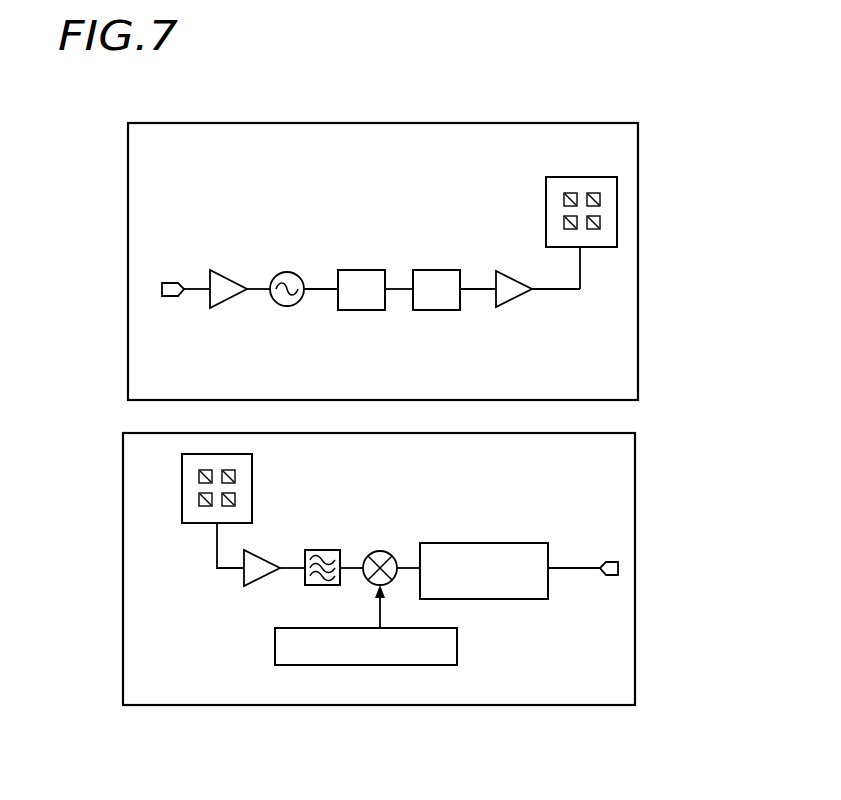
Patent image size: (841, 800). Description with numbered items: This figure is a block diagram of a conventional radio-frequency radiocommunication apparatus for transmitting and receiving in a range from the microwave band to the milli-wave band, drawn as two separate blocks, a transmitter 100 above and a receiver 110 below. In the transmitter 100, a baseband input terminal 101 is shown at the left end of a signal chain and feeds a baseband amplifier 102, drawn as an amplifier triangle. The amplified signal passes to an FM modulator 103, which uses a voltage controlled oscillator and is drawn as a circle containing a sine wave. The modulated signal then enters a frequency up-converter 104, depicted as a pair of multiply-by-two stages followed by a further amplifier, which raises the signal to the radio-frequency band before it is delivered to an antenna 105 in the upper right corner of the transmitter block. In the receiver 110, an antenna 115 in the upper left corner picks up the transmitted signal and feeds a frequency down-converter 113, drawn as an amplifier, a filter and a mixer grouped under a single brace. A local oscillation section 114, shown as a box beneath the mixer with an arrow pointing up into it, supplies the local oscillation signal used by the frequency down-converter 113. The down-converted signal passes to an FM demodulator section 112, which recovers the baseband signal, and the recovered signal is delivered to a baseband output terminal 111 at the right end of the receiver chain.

The transmitter 100 is at (601, 122).
The baseband input terminal 101 is at (172, 283).
The baseband amplifier 102 is at (229, 270).
The FM modulator 103 is at (284, 272).
The frequency up-converter 104 is at (535, 265).
The antenna 105 is at (547, 177).
The receiver 110 is at (601, 706).
The baseband output terminal 111 is at (614, 562).
The FM demodulator section 112 is at (447, 553).
The frequency down-converter 113 is at (407, 549).
The local oscillation section 114 is at (457, 643).
The antenna 115 is at (252, 485).